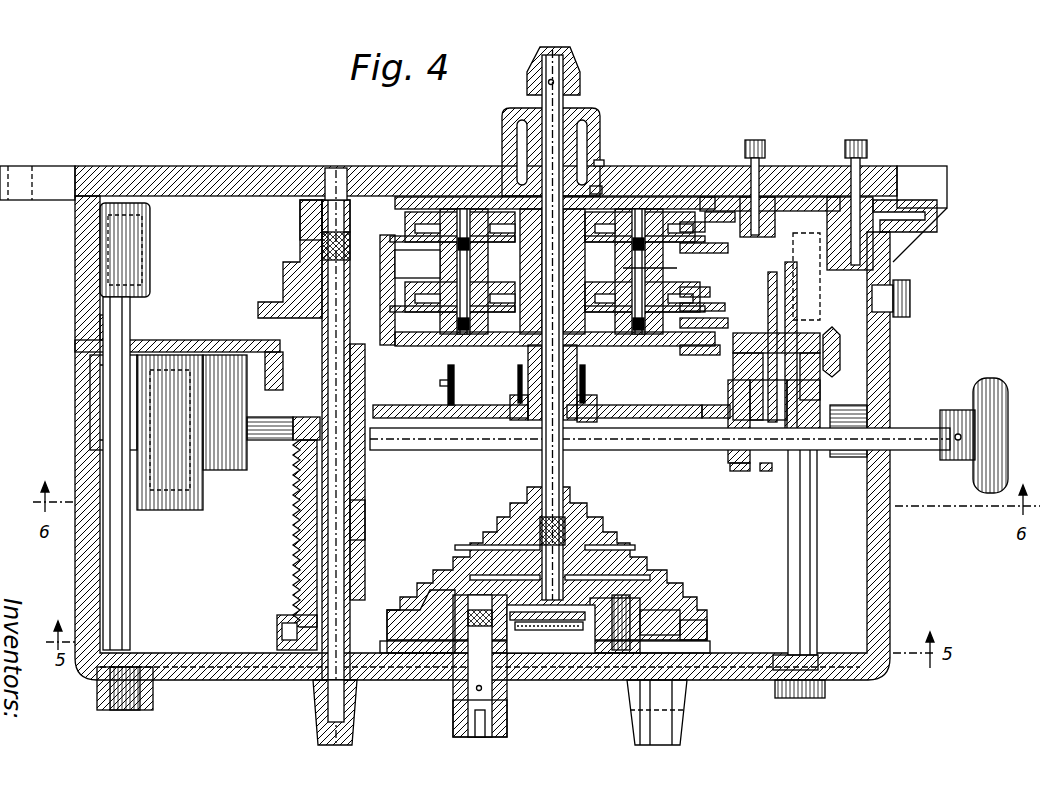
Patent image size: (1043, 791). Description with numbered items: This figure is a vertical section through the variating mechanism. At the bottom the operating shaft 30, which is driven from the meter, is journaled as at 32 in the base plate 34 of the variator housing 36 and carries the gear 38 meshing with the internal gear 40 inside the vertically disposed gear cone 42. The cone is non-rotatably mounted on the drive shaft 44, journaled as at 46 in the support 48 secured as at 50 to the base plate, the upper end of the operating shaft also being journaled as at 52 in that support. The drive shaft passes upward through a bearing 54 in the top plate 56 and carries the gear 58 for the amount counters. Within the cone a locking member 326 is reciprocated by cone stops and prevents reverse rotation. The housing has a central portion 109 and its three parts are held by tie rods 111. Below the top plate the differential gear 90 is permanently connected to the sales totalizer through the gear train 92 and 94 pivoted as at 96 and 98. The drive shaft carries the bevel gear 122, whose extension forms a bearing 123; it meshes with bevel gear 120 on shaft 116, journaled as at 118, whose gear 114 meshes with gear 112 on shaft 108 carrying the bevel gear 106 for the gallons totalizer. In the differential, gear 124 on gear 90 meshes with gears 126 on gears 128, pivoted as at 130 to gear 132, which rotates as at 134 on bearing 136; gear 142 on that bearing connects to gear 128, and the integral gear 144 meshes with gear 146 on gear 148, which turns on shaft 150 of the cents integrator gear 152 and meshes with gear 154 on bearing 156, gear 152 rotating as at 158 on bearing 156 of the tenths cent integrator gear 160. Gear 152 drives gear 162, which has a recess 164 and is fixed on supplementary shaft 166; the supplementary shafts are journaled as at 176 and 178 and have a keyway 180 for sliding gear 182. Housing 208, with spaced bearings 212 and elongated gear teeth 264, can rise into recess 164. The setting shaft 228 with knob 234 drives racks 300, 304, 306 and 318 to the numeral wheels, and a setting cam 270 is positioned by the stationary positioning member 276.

The operating shaft 30 is at (452, 713).
The journal 32 is at (450, 670).
The base plate 34 is at (228, 675).
The variator housing 36 is at (83, 662).
The gear 38 is at (540, 652).
The internal gear 40 is at (684, 641).
The gear cone 42 is at (655, 592).
The drive shaft 44 is at (578, 521).
The journal 46 is at (610, 549).
The support 48 is at (637, 565).
The securing point 50 is at (684, 601).
The journal 52 is at (447, 578).
The bearing 54 is at (566, 118).
The top plate 56 is at (602, 180).
The gear 58 is at (567, 61).
The gear 90 is at (427, 198).
The gear train gear 92 is at (793, 200).
The gear train gear 94 is at (938, 230).
The pivot 96 is at (762, 160).
The pivot 98 is at (861, 165).
The bevel gear 106 is at (845, 335).
The shaft 108 is at (845, 352).
The central portion 109 is at (897, 397).
The tie rods 111 is at (112, 558).
The gear 112 is at (768, 284).
The gear 114 is at (767, 472).
The shaft 116 is at (688, 450).
The journal 118 is at (740, 472).
The bevel gear 120 is at (580, 471).
The bevel gear 122 is at (523, 431).
The bearing 123 is at (598, 395).
The gear 124 is at (617, 212).
The gears 126 is at (675, 218).
The gears 128 is at (708, 212).
The pivot 130 is at (642, 210).
The gear 132 is at (729, 247).
The rotatable mounting 134 is at (597, 193).
The bearing 136 is at (500, 214).
The gear 142 is at (599, 162).
The gear 144 is at (667, 267).
The gear 146 is at (700, 276).
The gear 148 is at (711, 293).
The shaft 150 is at (700, 310).
The cents integrator gear 152 is at (690, 325).
The gear 154 is at (458, 342).
The bearing 156 is at (607, 356).
The rotatable mounting 158 is at (455, 369).
The tenths cent integrator gear 160 is at (683, 354).
The gear 162 is at (392, 347).
The recess 164 is at (283, 283).
The supplementary shaft 166 is at (300, 241).
The journal 176 is at (322, 217).
The journal 178 is at (310, 684).
The keyway 180 is at (366, 497).
The gear 182 is at (287, 615).
The housing 208 is at (360, 543).
The spaced bearings 212 is at (353, 444).
The setting shaft 228 is at (924, 425).
The setting knob 234 is at (997, 377).
The elongated gear teeth 264 is at (366, 515).
The setting cam member 270 is at (176, 512).
The stationary positioning member 276 is at (95, 380).
The rack 300 is at (630, 427).
The rack 304 is at (448, 382).
The rack 306 is at (486, 432).
The rack 318 is at (518, 383).
The locking member 326 is at (560, 641).